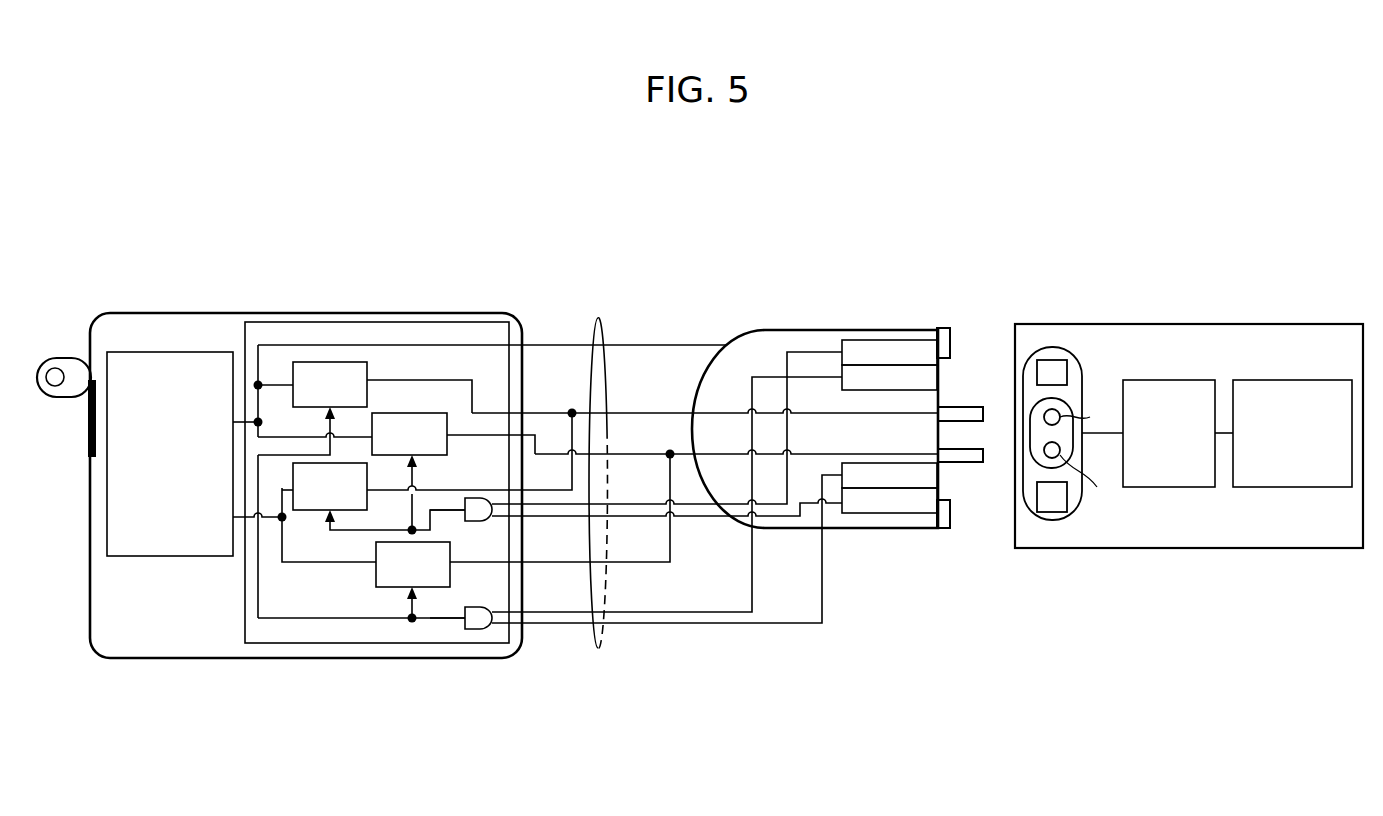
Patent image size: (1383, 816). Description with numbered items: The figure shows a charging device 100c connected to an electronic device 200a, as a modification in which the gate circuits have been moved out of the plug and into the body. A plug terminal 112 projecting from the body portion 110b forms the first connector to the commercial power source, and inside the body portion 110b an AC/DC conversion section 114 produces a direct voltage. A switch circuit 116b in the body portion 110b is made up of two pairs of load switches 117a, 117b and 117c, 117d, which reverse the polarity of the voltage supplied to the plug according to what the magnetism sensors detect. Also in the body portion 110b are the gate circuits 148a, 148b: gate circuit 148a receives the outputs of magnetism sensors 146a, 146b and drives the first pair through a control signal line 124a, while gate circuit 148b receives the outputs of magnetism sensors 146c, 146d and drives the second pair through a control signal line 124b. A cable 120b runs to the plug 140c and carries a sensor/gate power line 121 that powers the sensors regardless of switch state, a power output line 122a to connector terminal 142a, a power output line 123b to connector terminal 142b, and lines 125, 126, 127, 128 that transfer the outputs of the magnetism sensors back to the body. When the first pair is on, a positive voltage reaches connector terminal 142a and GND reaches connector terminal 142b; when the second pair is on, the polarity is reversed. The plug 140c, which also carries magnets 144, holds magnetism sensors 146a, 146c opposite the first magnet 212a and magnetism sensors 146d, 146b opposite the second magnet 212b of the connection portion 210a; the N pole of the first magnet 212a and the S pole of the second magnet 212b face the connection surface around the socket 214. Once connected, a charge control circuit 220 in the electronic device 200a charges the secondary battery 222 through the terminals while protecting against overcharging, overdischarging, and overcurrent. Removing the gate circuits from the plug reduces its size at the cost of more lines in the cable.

The charging device 100c is at (680, 193).
The body portion 110b is at (228, 313).
The plug terminal 112 is at (60, 398).
The AC/DC conversion section 114 is at (173, 556).
The switch circuit 116b is at (277, 643).
The load switch 117a is at (330, 362).
The load switch 117b is at (395, 587).
The load switch 117c is at (414, 413).
The load switch 117d is at (315, 510).
The cable 120b is at (597, 648).
The sensor/gate power line 121 is at (645, 345).
The power output line 122a is at (632, 413).
The power output line 123b is at (656, 442).
The control signal line 124a is at (433, 616).
The control signal line 124b is at (437, 515).
The line 125 is at (656, 490).
The line 126 is at (740, 518).
The line 127 is at (686, 612).
The line 128 is at (665, 623).
The plug 140c is at (778, 322).
The connector terminal 142a is at (965, 407).
The connector terminal 142b is at (963, 462).
The magnet 144 is at (945, 328).
The magnetism sensor 146a is at (840, 367).
The magnetism sensor 146b is at (840, 488).
The magnetism sensor 146c is at (888, 340).
The magnetism sensor 146d is at (893, 513).
The gate circuit 148a is at (490, 629).
The gate circuit 148b is at (481, 519).
The electronic device 200a is at (1232, 324).
The connection portion 210a is at (1088, 528).
The first magnet 212a is at (1052, 360).
The second magnet 212b is at (1055, 512).
The socket 214 is at (1067, 402).
The charge control circuit 220 is at (1180, 487).
The secondary battery 222 is at (1287, 487).